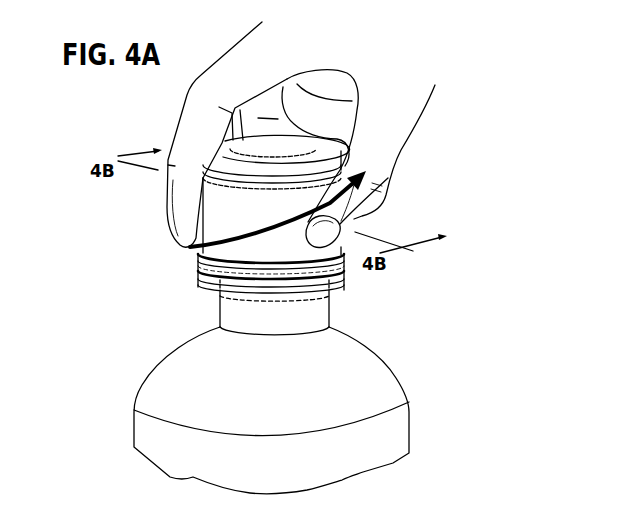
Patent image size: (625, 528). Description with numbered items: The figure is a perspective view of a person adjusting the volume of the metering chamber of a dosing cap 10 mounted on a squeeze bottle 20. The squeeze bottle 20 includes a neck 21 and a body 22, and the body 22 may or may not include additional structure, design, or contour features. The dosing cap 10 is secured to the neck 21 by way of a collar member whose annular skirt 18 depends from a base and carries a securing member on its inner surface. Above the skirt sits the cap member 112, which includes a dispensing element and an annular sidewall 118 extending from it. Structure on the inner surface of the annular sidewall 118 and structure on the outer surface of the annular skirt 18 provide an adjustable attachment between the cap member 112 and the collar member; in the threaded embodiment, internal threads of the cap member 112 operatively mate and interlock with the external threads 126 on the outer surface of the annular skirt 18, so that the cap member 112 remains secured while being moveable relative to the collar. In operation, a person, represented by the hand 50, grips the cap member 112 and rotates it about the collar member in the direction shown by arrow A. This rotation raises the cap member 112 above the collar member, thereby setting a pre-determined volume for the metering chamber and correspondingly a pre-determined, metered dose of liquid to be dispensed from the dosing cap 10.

The dosing cap 10 is at (404, 226).
The annular sidewall 118 is at (282, 217).
The cap member 112 is at (153, 252).
The annular skirt 18 is at (198, 266).
The external threads 126 is at (218, 284).
The squeeze bottle 20 is at (119, 413).
The neck 21 is at (318, 315).
The body 22 is at (411, 433).
The hand 50 is at (397, 152).
The arrow A is at (367, 218).